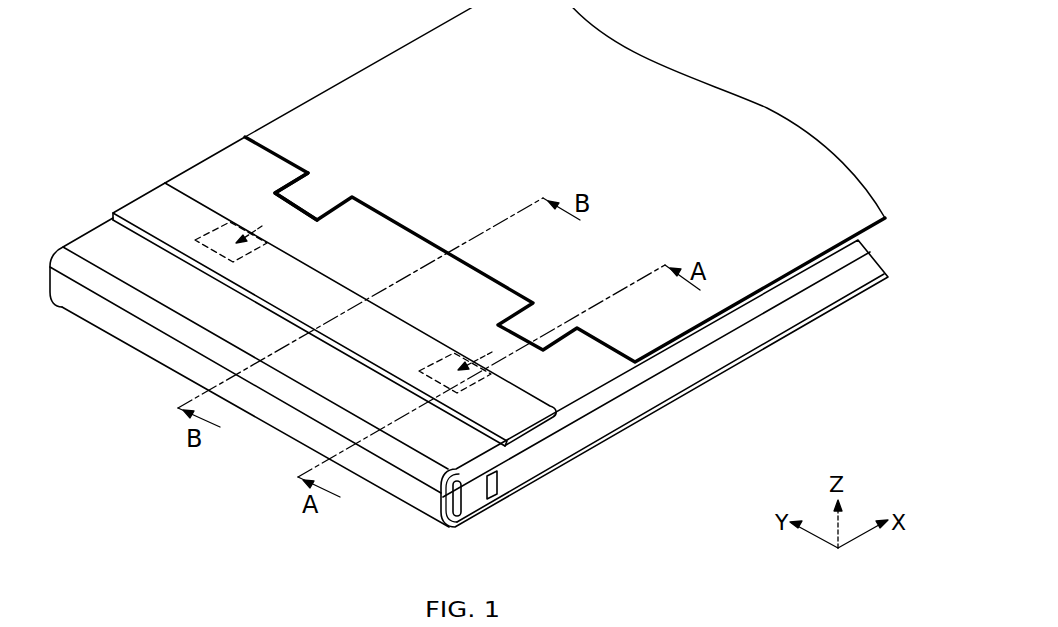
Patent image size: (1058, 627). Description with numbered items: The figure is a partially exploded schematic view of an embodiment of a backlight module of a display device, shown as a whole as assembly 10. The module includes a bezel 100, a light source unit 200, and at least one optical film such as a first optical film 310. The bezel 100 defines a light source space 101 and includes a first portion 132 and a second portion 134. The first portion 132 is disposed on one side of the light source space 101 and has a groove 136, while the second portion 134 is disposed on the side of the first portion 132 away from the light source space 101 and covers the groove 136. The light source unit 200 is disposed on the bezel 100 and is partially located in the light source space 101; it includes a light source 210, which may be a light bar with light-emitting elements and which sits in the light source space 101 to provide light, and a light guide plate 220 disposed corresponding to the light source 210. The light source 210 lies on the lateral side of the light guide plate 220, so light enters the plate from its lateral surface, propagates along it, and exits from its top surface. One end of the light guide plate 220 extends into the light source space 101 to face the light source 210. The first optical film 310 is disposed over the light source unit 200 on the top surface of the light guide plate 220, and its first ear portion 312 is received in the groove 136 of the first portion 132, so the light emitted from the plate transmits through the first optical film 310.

The electronic device 10 is at (138, 25).
The bezel 100 is at (137, 265).
The light source space 101 is at (458, 498).
The first portion 132 is at (563, 427).
The second portion 134 is at (547, 413).
The groove 136 is at (213, 250).
The light source unit 200 is at (625, 503).
The light source 210 is at (473, 503).
The light guide plate 220 is at (577, 438).
The first optical film 310 is at (765, 125).
The first ear portion 312 is at (293, 197).